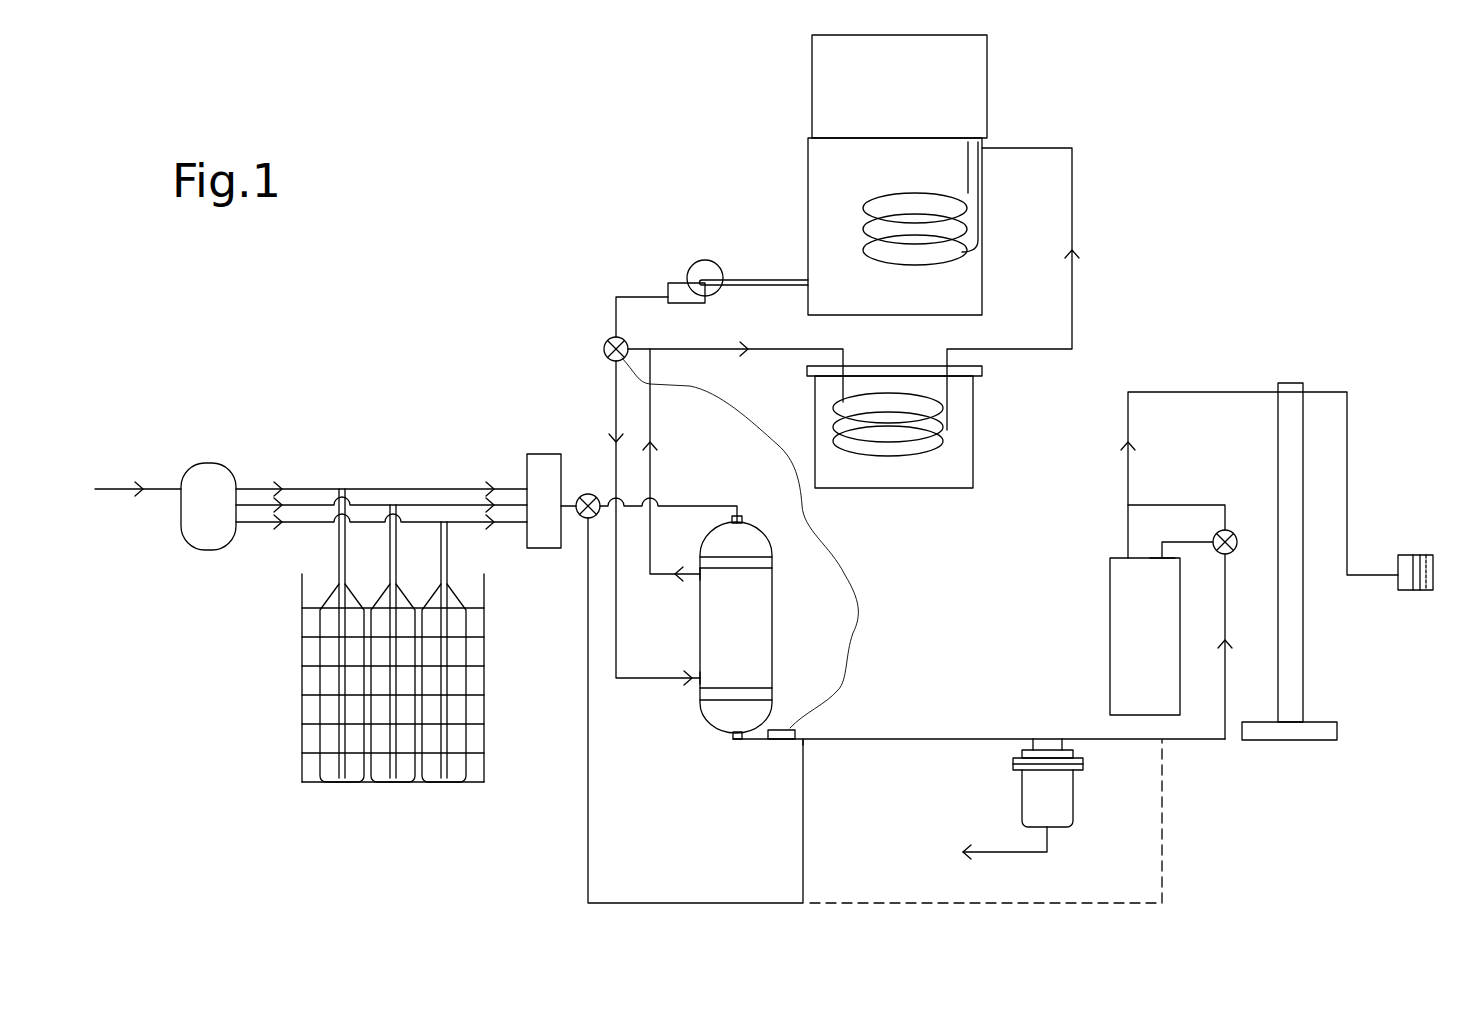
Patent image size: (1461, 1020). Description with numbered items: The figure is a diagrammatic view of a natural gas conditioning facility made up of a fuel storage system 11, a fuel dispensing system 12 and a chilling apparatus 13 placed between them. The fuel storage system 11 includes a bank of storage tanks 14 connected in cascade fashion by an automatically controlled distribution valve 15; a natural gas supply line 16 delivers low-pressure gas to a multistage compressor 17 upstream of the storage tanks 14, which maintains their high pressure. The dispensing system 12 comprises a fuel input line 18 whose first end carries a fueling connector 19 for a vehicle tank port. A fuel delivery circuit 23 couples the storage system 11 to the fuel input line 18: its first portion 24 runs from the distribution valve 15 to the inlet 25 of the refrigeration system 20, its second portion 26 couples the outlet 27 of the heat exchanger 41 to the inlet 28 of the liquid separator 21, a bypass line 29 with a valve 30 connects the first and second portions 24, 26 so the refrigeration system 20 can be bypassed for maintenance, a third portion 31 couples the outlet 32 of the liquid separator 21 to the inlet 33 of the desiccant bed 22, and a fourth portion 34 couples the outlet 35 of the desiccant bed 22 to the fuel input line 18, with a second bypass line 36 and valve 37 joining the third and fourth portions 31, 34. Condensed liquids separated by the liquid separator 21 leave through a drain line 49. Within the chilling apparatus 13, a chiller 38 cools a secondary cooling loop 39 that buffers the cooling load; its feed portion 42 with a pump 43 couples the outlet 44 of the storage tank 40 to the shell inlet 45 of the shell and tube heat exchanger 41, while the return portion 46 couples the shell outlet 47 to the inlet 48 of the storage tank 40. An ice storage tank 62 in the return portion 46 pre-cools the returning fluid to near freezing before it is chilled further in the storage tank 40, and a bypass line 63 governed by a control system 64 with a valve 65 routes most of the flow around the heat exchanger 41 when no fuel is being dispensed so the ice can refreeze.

The fuel storage system 11 is at (336, 392).
The fuel dispensing system 12 is at (1293, 302).
The chilling apparatus 13 is at (538, 208).
The storage tanks 14 is at (444, 782).
The distribution valve 15 is at (547, 453).
The natural gas supply line 16 is at (125, 487).
The multistage compressor 17 is at (205, 463).
The fuel input line 18 is at (1347, 435).
The fueling connector 19 is at (1400, 555).
The refrigeration system 20 is at (792, 116).
The liquid separator 21 is at (1073, 800).
The desiccant bed 22 is at (1110, 620).
The fuel delivery circuit 23 is at (843, 752).
The first portion 24 is at (694, 506).
The inlet 25 is at (738, 523).
The second portion 26 is at (940, 741).
The outlet 27 is at (735, 737).
The inlet 28 is at (1036, 750).
The bypass line 29 is at (668, 903).
The valve 30 is at (590, 519).
The third portion 31 is at (1183, 741).
The outlet 32 is at (1062, 750).
The inlet 33 is at (1162, 556).
The fourth portion 34 is at (1128, 420).
The outlet 35 is at (1128, 553).
The second bypass line 36 is at (1175, 505).
The valve 37 is at (1236, 534).
The chiller 38 is at (812, 82).
The secondary cooling loop 39 is at (600, 300).
The storage tank 40 is at (982, 235).
The heat exchanger 41 is at (772, 623).
The feed portion 42 is at (613, 400).
The pump 43 is at (700, 262).
The outlet 44 is at (806, 280).
The shell inlet 45 is at (703, 682).
The return portion 46 is at (651, 410).
The shell outlet 47 is at (703, 590).
The inlet 48 is at (988, 148).
The drain line 49 is at (995, 852).
The ice storage tank 62 is at (973, 432).
The bypass line 63 is at (643, 349).
The control system 64 is at (706, 395).
The valve 65 is at (604, 349).